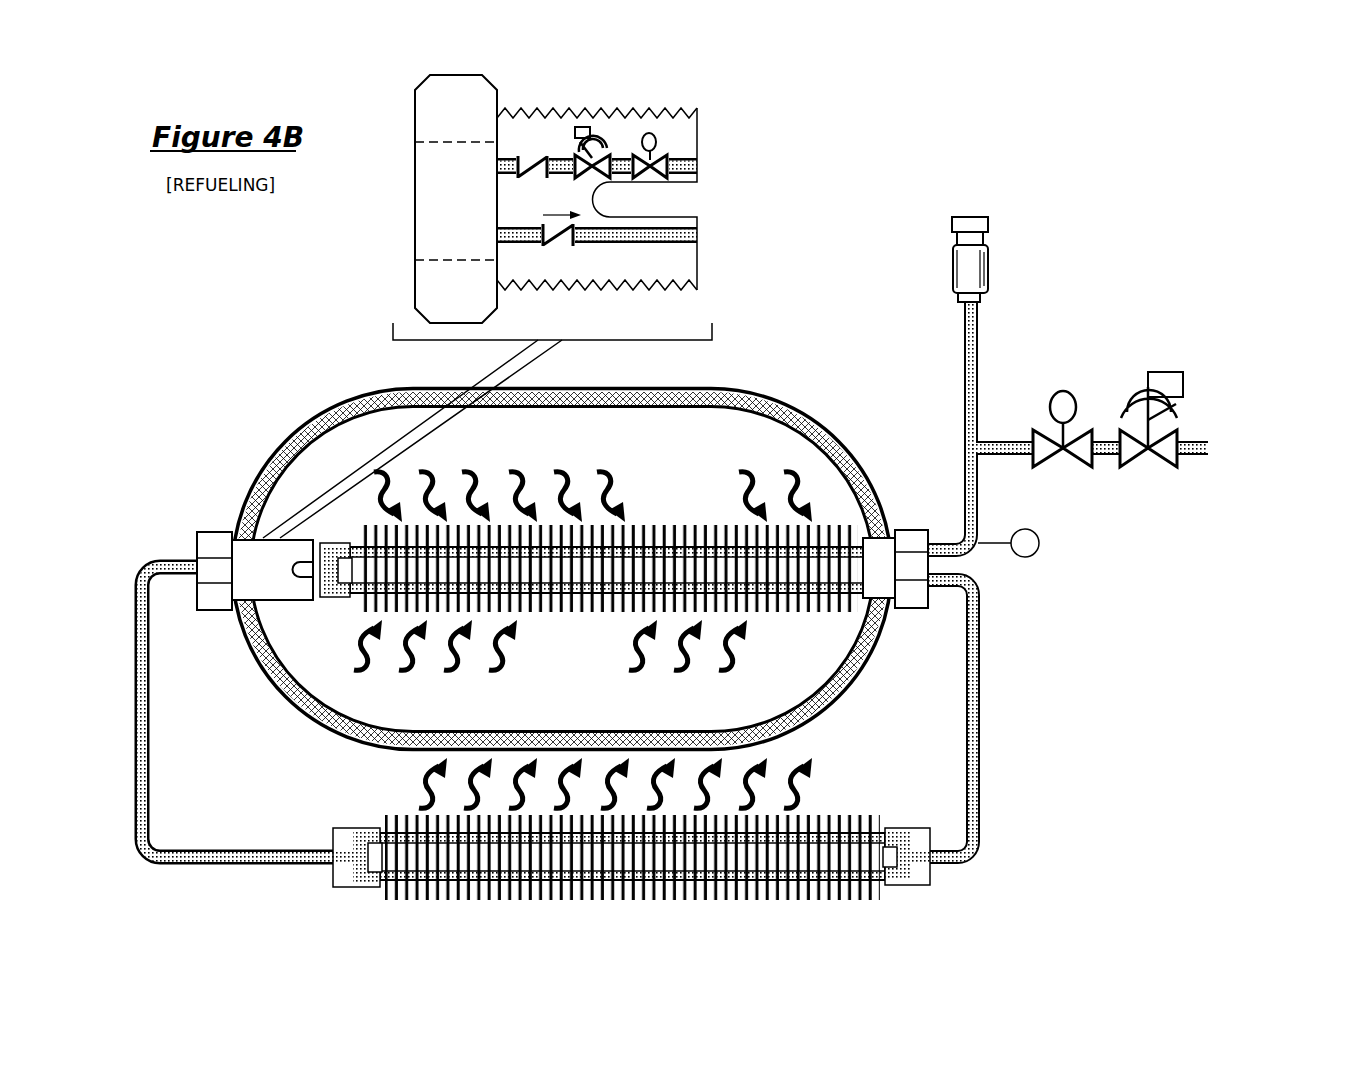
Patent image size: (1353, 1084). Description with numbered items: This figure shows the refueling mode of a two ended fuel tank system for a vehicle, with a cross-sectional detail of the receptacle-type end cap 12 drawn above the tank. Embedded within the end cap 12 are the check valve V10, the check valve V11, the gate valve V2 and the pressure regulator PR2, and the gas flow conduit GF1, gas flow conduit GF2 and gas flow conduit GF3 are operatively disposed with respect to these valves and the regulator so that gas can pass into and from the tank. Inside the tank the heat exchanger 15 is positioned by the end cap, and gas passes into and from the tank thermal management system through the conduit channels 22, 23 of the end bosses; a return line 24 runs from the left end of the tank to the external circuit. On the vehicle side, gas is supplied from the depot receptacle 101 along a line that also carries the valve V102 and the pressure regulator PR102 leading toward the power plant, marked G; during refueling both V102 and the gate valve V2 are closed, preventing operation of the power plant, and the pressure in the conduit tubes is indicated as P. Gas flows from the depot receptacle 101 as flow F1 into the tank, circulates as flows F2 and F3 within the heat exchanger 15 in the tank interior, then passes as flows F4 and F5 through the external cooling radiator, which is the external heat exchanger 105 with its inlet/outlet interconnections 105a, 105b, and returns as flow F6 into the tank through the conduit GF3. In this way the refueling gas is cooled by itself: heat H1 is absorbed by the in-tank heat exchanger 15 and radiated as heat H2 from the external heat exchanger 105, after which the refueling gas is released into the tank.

The end cap 12 is at (270, 537).
The heat exchanger 15 is at (778, 607).
The conduit channel 22 is at (337, 597).
The conduit channel 23 is at (953, 590).
The return line 24 is at (180, 575).
The depot receptacle 101 is at (989, 270).
The external heat exchanger 105 is at (845, 813).
The inlet/outlet interconnection 105a is at (940, 863).
The inlet/outlet interconnection 105b is at (320, 867).
The check valve V10 is at (532, 158).
The check valve V11 is at (557, 245).
The gate valve V2 is at (648, 132).
The pressure regulator PR2 is at (590, 130).
The valve V102 is at (1035, 465).
The pressure regulator PR102 is at (1120, 465).
The gas flow conduit GF1 is at (401, 200).
The gas flow conduit GF2 is at (704, 160).
The gas flow conduit GF3 is at (699, 235).
The flow F1 is at (942, 410).
The flow F2 is at (660, 497).
The flow F3 is at (540, 637).
The flow F4 is at (942, 665).
The flow F5 is at (167, 692).
The flow F6 is at (136, 540).
The heat H1 is at (513, 477).
The heat H2 is at (425, 787).
The pressure P is at (1008, 543).
The gas to vehicle G is at (1208, 442).